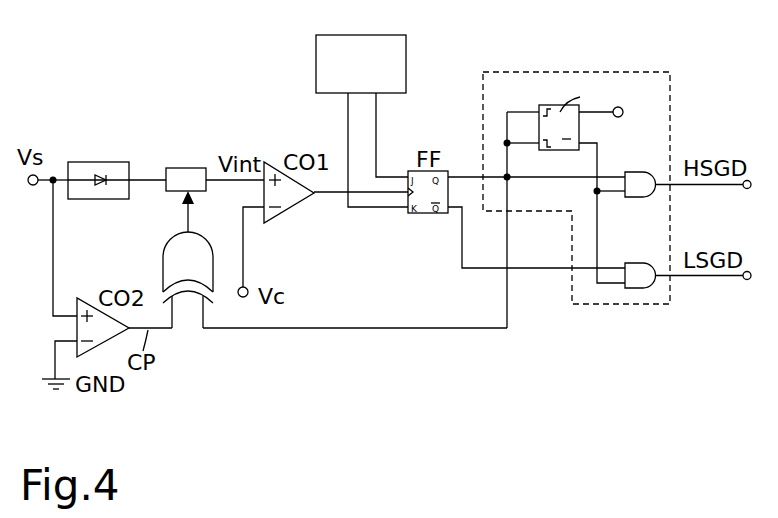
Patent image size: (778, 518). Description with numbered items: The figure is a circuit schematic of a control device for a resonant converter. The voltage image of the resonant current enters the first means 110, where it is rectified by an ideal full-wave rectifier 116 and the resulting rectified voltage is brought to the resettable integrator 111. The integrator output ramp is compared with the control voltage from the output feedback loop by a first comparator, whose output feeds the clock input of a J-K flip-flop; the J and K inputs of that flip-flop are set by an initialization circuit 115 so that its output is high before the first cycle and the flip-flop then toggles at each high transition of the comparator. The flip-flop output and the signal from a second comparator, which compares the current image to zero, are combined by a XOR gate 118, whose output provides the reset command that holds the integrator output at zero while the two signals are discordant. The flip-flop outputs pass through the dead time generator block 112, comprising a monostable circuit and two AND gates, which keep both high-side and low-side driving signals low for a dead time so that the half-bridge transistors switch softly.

The first means 110 is at (169, 136).
The resettable integrator 111 is at (183, 175).
The dead time generator block 112 is at (623, 72).
The initialization circuit 115 is at (382, 72).
The ideal full-wave rectifier 116 is at (100, 167).
The XOR gate 118 is at (186, 277).